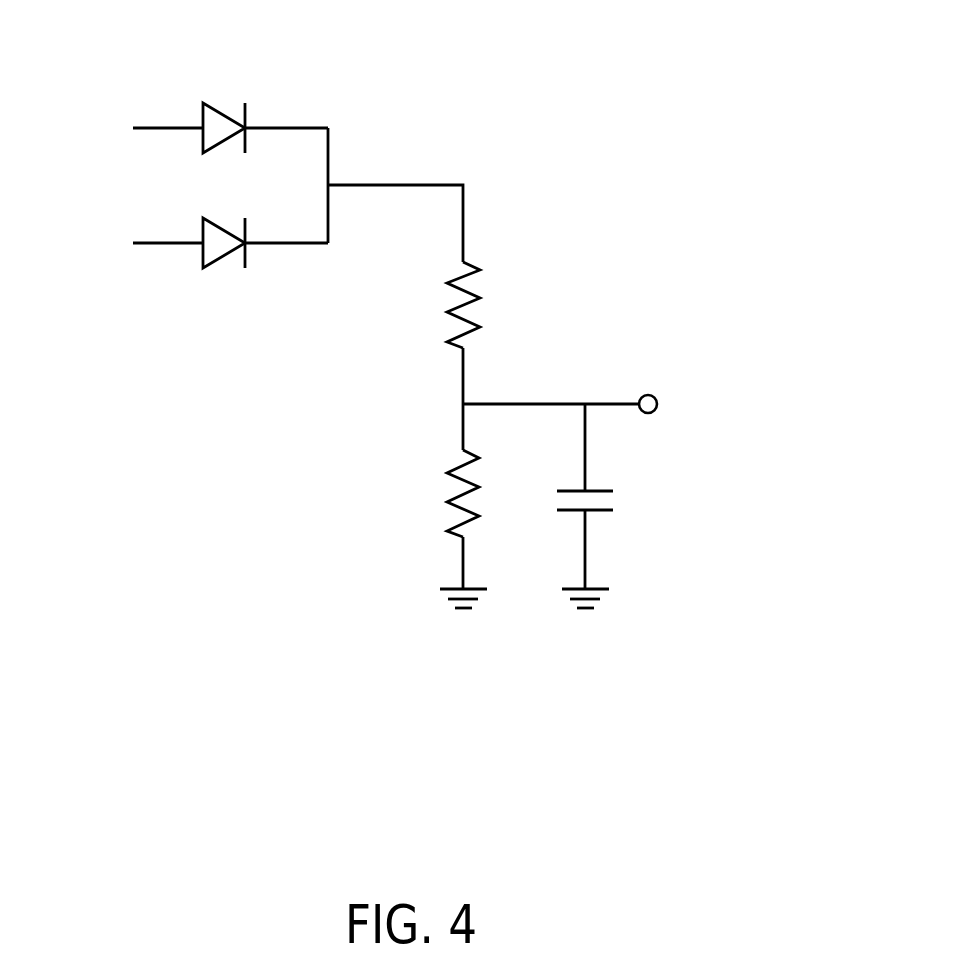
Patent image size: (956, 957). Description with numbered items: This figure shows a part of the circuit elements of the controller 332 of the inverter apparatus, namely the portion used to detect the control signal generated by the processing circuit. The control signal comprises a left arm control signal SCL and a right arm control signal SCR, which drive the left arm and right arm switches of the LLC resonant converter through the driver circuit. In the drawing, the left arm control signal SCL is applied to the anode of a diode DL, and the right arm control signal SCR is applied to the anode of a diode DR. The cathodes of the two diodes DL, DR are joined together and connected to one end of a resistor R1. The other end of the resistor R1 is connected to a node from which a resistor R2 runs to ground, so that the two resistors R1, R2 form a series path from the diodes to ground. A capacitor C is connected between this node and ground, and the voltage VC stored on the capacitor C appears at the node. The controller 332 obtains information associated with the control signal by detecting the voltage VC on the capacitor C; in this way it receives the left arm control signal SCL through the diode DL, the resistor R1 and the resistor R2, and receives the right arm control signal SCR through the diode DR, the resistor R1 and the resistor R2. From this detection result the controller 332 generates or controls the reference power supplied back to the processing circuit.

The controller 332 is at (454, 307).
The left arm control signal SCL is at (141, 127).
The right arm control signal SCR is at (141, 242).
The diode DL is at (224, 108).
The diode DR is at (224, 266).
The resistor R1 is at (444, 305).
The resistor R2 is at (443, 493).
The capacitor C is at (604, 502).
The voltage VC is at (642, 403).